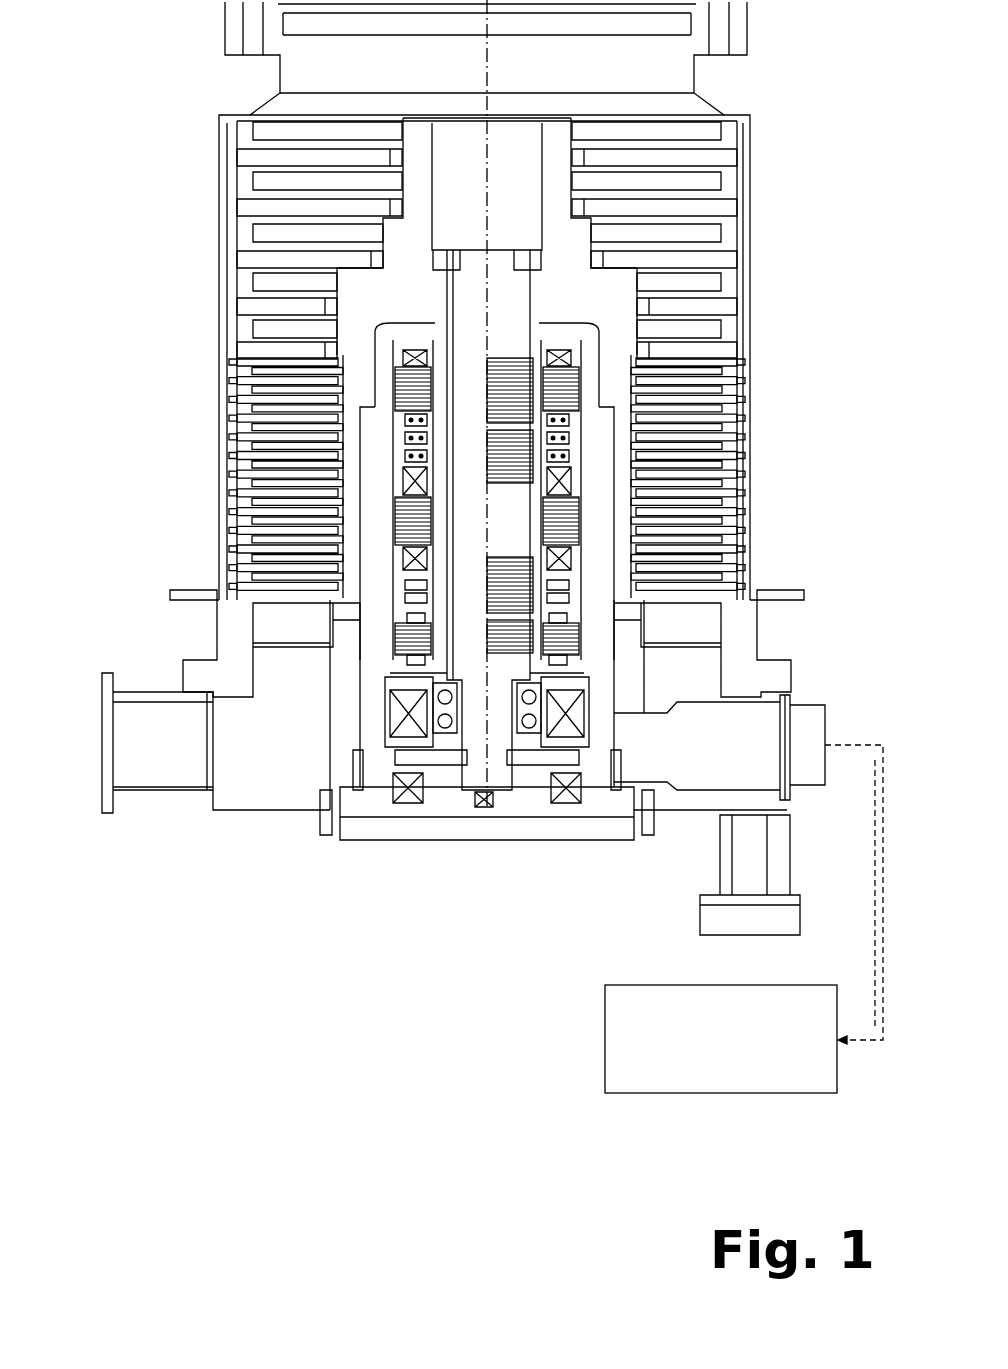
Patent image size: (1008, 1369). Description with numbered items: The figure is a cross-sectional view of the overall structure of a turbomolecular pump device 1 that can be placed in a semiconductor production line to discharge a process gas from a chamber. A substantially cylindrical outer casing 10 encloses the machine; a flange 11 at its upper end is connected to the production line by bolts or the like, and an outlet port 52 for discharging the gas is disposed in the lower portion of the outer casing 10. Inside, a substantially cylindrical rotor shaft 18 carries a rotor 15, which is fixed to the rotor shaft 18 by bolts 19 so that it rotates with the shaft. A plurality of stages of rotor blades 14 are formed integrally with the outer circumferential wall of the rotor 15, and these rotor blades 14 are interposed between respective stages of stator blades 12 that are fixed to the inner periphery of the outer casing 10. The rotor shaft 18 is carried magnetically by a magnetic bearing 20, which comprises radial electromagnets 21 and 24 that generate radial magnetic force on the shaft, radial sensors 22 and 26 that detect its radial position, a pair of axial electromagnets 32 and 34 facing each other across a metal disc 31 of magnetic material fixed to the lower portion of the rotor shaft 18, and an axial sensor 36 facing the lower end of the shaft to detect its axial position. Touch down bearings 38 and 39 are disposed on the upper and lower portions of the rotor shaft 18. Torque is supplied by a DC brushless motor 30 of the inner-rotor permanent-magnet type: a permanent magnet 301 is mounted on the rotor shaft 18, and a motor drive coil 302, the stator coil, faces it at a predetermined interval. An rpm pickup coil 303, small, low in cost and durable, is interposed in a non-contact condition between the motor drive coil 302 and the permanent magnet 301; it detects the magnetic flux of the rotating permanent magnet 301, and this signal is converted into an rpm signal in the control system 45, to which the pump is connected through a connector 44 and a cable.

The turbomolecular pump device 1 is at (767, 236).
The outer casing 10 is at (752, 106).
The flange 11 is at (752, 36).
The stator blades 12 is at (240, 157).
The rotor blades 14 is at (250, 140).
The rotor 15 is at (610, 328).
The rotor shaft 18 is at (470, 660).
The bolts 19 is at (447, 253).
The magnetic bearing 20 is at (705, 376).
The radial electromagnet 21 is at (392, 372).
The radial sensor 22 is at (392, 445).
The radial electromagnet 24 is at (392, 632).
The radial sensor 26 is at (392, 587).
The DC brushless motor 30 is at (395, 515).
The metal disc 31 is at (440, 757).
The axial electromagnet 32 is at (386, 713).
The axial electromagnet 34 is at (400, 805).
The axial sensor 36 is at (478, 807).
The touch down bearing 38 is at (400, 318).
The touch down bearing 39 is at (437, 680).
The connector 44 is at (827, 716).
The control system 45 is at (721, 1039).
The outlet port 52 is at (102, 716).
The permanent magnet 301 is at (520, 543).
The motor drive coil 302 is at (565, 483).
The pickup coil 303 is at (572, 458).